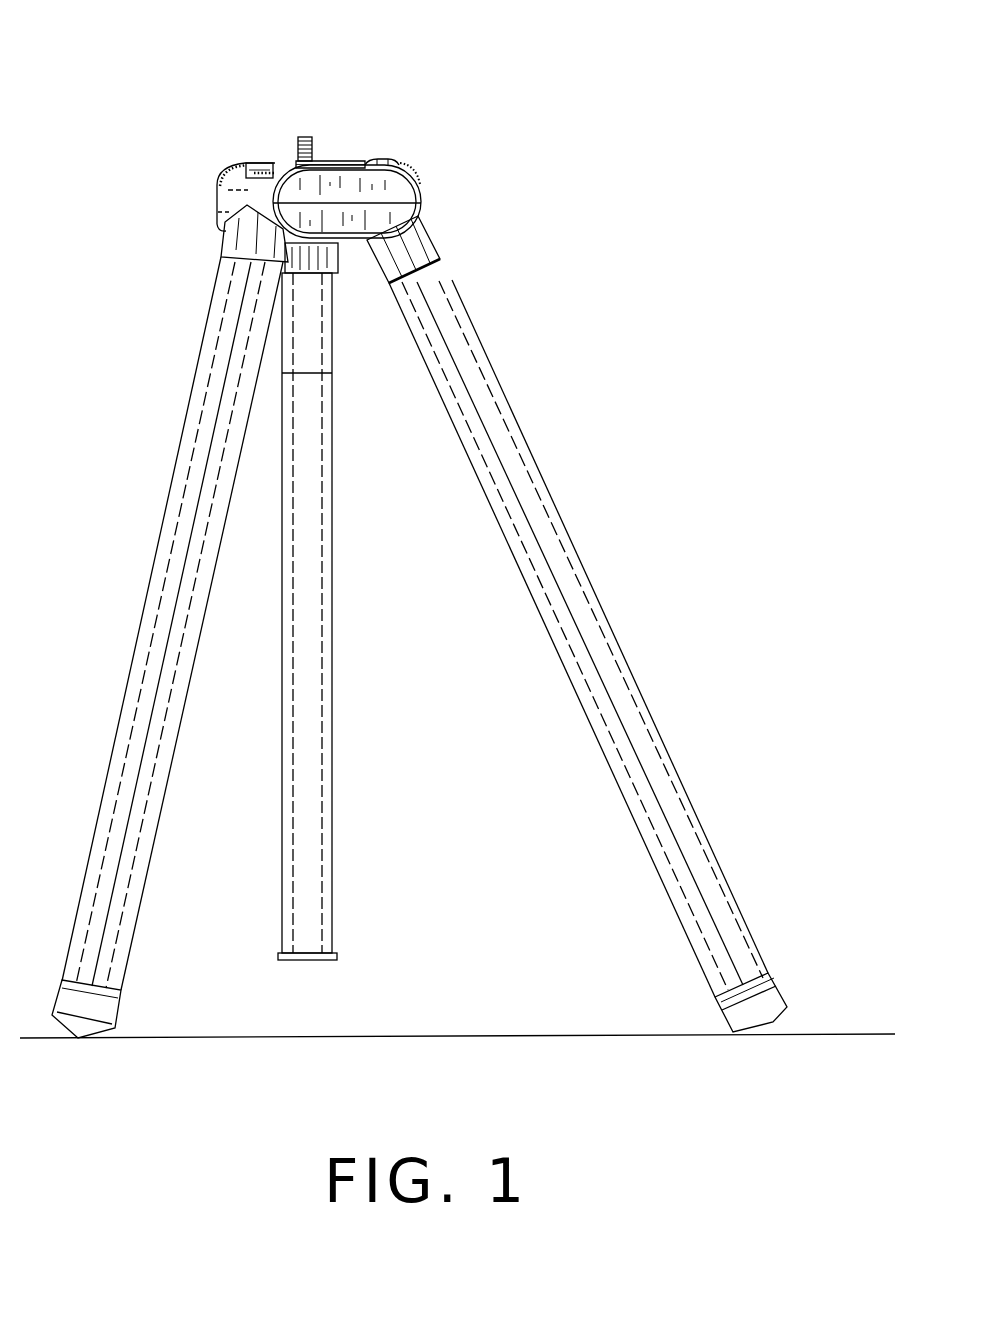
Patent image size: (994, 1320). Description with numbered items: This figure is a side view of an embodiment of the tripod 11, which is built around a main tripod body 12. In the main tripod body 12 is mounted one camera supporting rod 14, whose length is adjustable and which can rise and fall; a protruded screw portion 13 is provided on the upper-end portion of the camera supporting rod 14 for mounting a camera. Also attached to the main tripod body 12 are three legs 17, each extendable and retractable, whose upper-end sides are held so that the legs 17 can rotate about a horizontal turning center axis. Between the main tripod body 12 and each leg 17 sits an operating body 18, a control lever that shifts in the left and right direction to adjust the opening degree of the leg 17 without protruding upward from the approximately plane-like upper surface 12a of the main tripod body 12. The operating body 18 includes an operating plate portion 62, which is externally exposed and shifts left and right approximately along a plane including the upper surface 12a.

The tripod 11 is at (273, 98).
The main tripod body 12 is at (207, 212).
The upper surface 12a is at (365, 160).
The protruded screw portion 13 is at (312, 148).
The camera supporting rod 14 is at (337, 717).
The legs 17 is at (140, 623).
The operating body 18 is at (252, 155).
The operating plate portion 62 is at (398, 160).